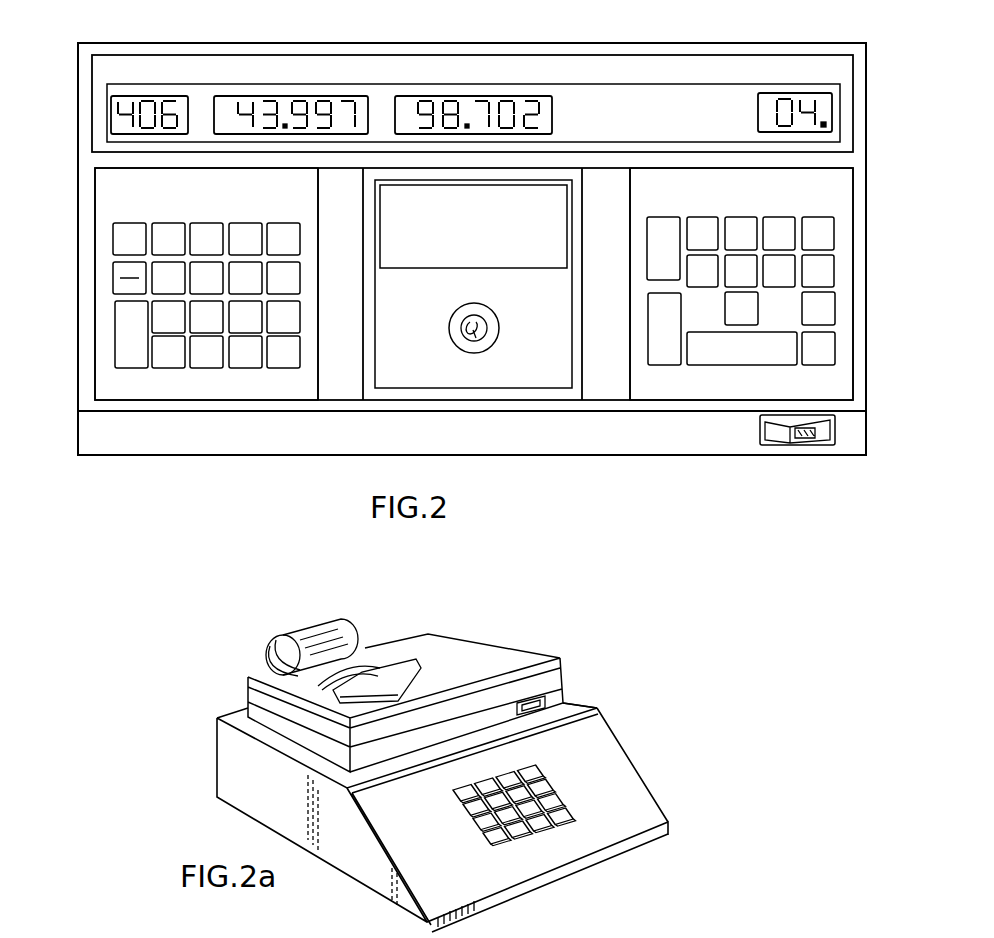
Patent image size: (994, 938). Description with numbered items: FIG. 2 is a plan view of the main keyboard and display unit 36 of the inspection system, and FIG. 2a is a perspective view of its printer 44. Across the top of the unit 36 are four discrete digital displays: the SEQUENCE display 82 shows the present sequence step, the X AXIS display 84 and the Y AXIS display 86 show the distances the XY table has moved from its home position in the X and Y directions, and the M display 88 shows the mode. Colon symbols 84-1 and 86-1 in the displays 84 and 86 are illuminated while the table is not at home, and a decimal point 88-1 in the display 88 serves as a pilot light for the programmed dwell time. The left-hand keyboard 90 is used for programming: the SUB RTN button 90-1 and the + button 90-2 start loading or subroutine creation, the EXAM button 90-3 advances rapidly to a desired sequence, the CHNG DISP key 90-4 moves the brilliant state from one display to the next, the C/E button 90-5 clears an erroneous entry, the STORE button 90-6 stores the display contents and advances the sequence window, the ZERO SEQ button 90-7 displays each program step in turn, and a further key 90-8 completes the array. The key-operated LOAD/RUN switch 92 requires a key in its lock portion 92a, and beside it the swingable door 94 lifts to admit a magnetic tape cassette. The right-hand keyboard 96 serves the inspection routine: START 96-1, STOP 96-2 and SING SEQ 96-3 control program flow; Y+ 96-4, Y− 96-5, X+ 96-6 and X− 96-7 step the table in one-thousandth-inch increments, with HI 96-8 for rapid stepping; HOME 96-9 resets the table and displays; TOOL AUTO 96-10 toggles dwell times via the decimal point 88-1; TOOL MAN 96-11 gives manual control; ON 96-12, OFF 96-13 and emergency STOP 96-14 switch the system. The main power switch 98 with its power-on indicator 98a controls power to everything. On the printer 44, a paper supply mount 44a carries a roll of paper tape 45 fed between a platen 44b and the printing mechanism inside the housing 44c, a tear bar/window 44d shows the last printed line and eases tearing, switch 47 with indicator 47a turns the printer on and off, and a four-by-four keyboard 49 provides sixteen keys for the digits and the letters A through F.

In FIG. 2, the control panel 36 is at (113, 498).
In FIG. 2, the sequence display 82 is at (187, 94).
In FIG. 2, the X axis display 84 is at (363, 94).
In FIG. 2, the colon symbol 84-1 is at (226, 94).
In FIG. 2, the Y axis display 86 is at (533, 98).
In FIG. 2, the colon symbol 86-1 is at (416, 103).
In FIG. 2, the mode display 88 is at (752, 93).
In FIG. 2, the decimal point 88-1 is at (833, 125).
In FIG. 2, the left-hand keyboard 90 is at (80, 191).
In FIG. 2, the SUB RTN button 90-1 is at (301, 317).
In FIG. 2, the + button 90-2 is at (128, 225).
In FIG. 2, the EXAM button 90-3 is at (301, 280).
In FIG. 2, the CHNG DISP key 90-4 is at (251, 368).
In FIG. 2, the C/E button 90-5 is at (176, 368).
In FIG. 2, the STORE button 90-6 is at (301, 354).
In FIG. 2, the ZERO SEQ button 90-7 is at (283, 224).
In FIG. 2, the minus key 90-8 is at (128, 283).
In FIG. 2, the LOAD/RUN key switch 92 is at (500, 334).
In FIG. 2, the lock portion 92a is at (484, 318).
In FIG. 2, the swingable door 94 is at (437, 272).
In FIG. 2, the right-hand keyboard 96 is at (875, 188).
In FIG. 2, the START button 96-1 is at (656, 221).
In FIG. 2, the STOP button 96-2 is at (650, 348).
In FIG. 2, the SING SEQ button 96-3 is at (700, 221).
In FIG. 2, the Y+ button 96-4 is at (740, 222).
In FIG. 2, the Y− button 96-5 is at (725, 310).
In FIG. 2, the X+ button 96-6 is at (700, 282).
In FIG. 2, the X− button 96-7 is at (785, 286).
In FIG. 2, the HI button 96-8 is at (728, 259).
In FIG. 2, the HOME button 96-9 is at (783, 221).
In FIG. 2, the TOOL AUTO button 96-10 is at (811, 221).
In FIG. 2, the TOOL MAN pushbutton 96-11 is at (827, 270).
In FIG. 2, the ON button 96-12 is at (826, 302).
In FIG. 2, the OFF button 96-13 is at (828, 340).
In FIG. 2, the emergency STOP button 96-14 is at (773, 363).
In FIG. 2, the main power switch 98 is at (773, 438).
In FIG. 2, the power on indicator 98a is at (790, 440).
In FIG. 2a, the printer 44 is at (553, 914).
In FIG. 2a, the paper supply mount 44a is at (275, 664).
In FIG. 2a, the platen 44b is at (362, 664).
In FIG. 2a, the housing 44c is at (482, 650).
In FIG. 2a, the tear bar/window 44d is at (408, 690).
In FIG. 2a, the roll of paper tape 45 is at (313, 632).
In FIG. 2a, the switch 47 is at (548, 688).
In FIG. 2a, the power on indicator 47a is at (566, 702).
In FIG. 2a, the keyboard 49 is at (493, 856).